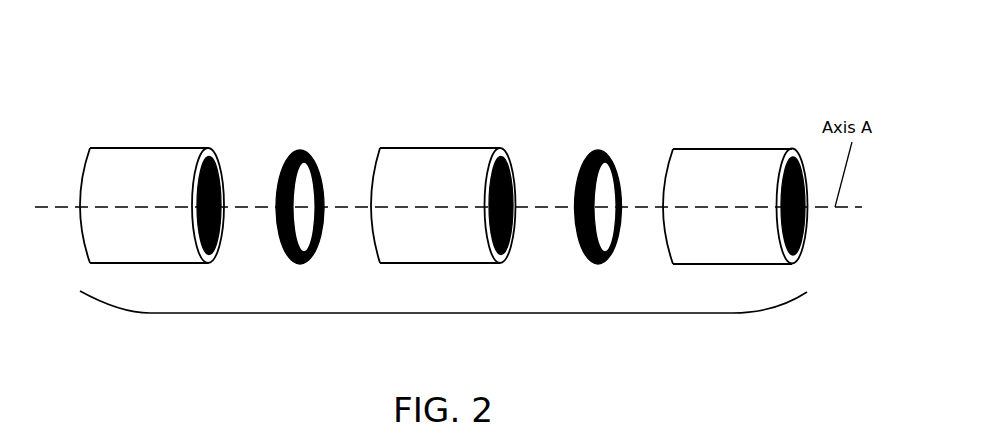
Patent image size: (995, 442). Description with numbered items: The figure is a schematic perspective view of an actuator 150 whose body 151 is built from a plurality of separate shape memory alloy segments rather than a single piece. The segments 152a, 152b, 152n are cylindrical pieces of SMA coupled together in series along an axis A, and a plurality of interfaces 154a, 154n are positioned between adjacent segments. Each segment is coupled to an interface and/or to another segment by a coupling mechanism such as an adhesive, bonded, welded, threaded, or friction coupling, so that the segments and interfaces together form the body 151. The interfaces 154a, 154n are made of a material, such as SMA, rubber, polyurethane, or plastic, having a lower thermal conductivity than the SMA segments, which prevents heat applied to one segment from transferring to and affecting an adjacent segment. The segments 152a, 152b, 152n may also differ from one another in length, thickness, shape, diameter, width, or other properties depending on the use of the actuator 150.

The actuator 150 is at (142, 96).
The body 151 is at (443, 313).
The segment 152a is at (145, 162).
The segment 152b is at (442, 165).
The segment 152n is at (723, 165).
The interface 154a is at (293, 152).
The interface 154n is at (593, 150).